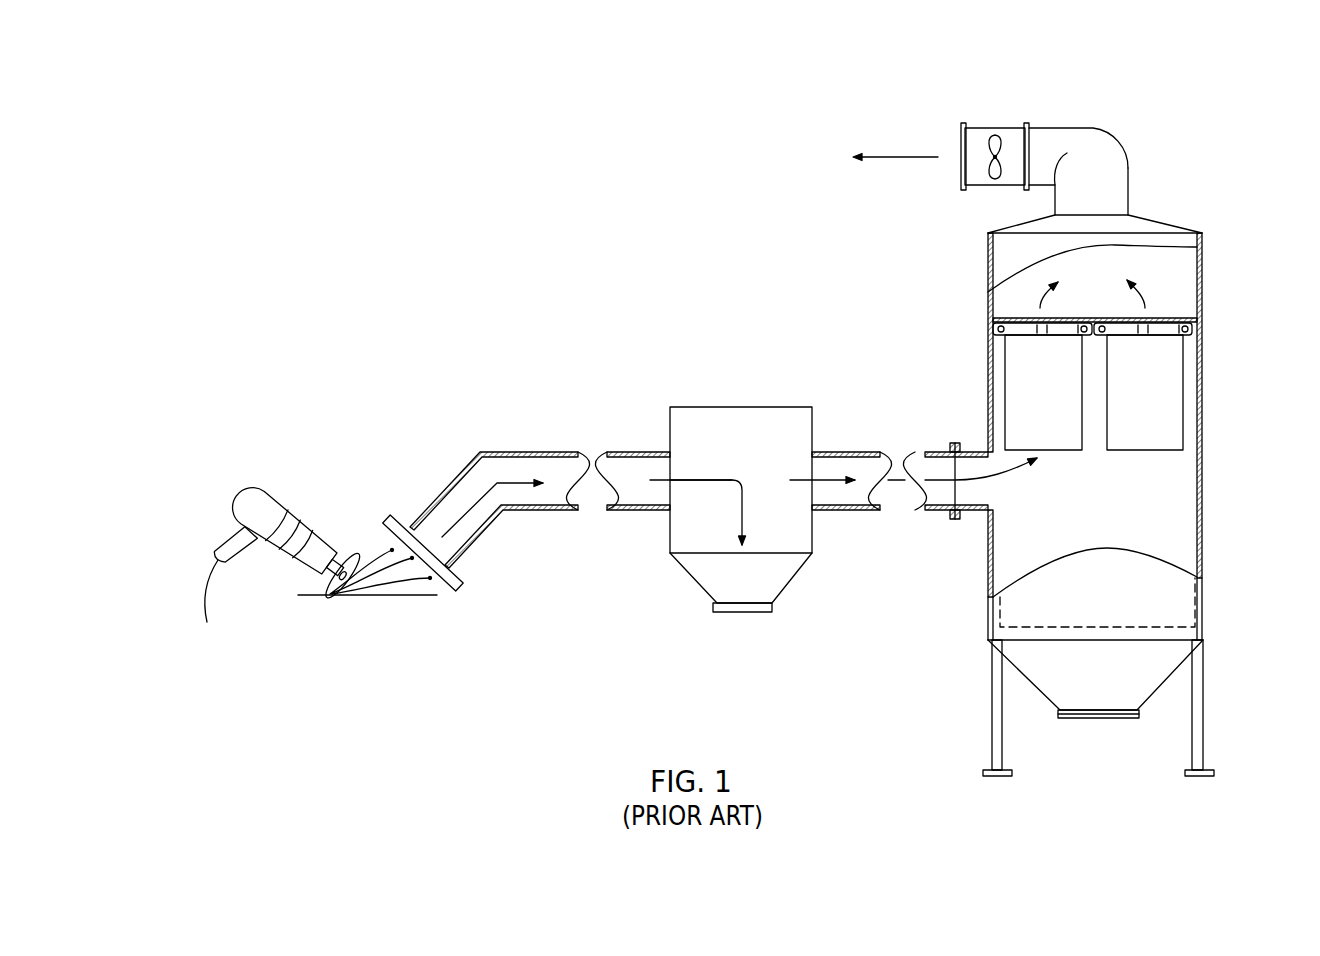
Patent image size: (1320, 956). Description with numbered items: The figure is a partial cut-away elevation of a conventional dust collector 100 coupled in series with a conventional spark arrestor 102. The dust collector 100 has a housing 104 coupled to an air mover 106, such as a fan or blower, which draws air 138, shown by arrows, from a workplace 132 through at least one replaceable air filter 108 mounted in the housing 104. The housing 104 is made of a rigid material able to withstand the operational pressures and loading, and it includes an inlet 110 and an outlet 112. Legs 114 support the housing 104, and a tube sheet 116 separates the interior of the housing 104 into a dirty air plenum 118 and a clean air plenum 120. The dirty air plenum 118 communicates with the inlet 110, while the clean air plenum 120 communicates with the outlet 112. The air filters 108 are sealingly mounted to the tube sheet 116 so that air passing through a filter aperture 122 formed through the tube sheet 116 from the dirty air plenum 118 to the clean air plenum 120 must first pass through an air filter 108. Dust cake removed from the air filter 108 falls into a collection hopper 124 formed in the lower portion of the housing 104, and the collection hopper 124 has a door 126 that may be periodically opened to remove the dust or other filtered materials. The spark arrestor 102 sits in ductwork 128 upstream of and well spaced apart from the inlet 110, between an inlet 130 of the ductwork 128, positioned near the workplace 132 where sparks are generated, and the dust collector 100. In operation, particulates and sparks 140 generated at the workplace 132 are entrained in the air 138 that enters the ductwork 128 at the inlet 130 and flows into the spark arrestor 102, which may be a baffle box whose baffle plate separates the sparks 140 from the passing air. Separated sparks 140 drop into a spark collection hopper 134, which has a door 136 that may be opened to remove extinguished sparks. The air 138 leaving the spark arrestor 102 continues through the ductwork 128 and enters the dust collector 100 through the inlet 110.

The dust collector 100 is at (1075, 429).
The spark arrestor 102 is at (741, 504).
The housing 104 is at (1202, 367).
The air mover 106 is at (983, 140).
The air filter 108 is at (1062, 452).
The inlet 110 is at (948, 487).
The outlet 112 is at (958, 170).
The legs 114 is at (1002, 742).
The tube sheet 116 is at (1080, 318).
The dirty air plenum 118 is at (1124, 546).
The clean air plenum 120 is at (1115, 274).
The filter aperture 122 is at (1157, 318).
The collection hopper 124 is at (1112, 689).
The door 126 is at (1103, 718).
The ductwork 128 is at (538, 453).
The inlet 130 is at (438, 596).
The workplace 132 is at (268, 498).
The spark collection hopper 134 is at (760, 589).
The door 136 is at (750, 612).
The air 138 is at (470, 512).
The sparks 140 is at (742, 507).